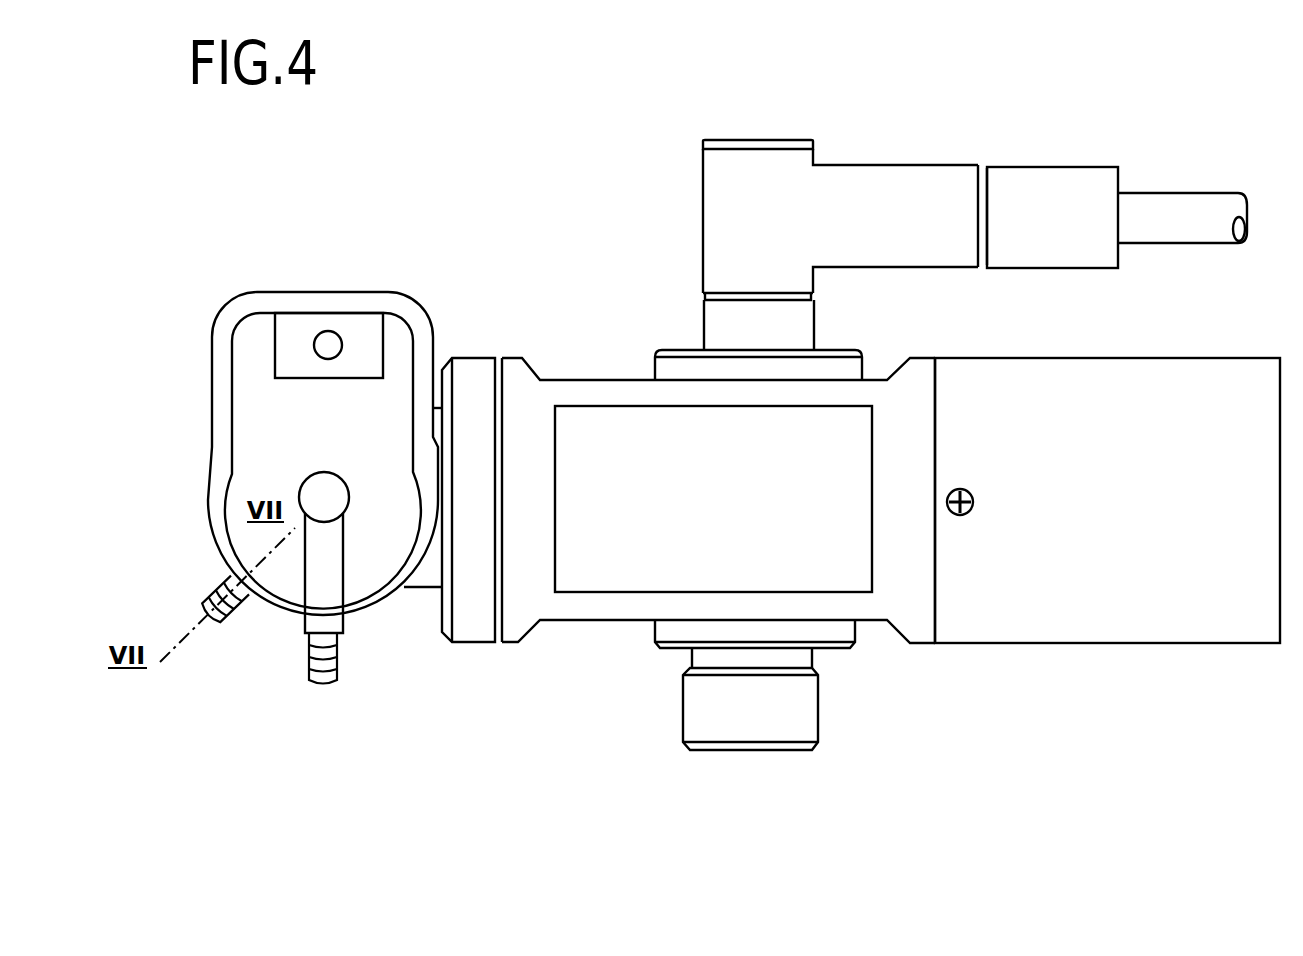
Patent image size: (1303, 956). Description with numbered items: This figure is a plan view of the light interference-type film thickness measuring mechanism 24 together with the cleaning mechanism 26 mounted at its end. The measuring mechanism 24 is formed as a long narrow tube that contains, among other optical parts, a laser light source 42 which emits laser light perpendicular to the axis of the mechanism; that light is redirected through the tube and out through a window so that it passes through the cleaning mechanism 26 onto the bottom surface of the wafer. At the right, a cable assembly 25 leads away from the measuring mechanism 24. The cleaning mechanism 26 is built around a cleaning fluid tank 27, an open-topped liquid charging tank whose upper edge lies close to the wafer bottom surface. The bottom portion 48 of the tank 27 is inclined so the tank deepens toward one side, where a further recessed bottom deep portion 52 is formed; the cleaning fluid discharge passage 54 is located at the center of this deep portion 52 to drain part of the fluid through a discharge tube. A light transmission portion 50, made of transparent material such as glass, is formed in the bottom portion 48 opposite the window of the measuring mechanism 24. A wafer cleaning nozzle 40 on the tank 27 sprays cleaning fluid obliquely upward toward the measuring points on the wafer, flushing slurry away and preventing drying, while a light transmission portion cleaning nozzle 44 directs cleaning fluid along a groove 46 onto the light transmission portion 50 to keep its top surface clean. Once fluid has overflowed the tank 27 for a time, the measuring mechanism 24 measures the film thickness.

The light interference-type film thickness measuring mechanism 24 is at (1180, 352).
The cable coupling assembly 25 is at (1043, 148).
The cleaning mechanism 26 is at (269, 417).
The cleaning fluid tank 27 is at (243, 300).
The wafer cleaning nozzle 40 is at (223, 593).
The laser light source 42 is at (762, 141).
The light transmission portion cleaning nozzle 44 is at (338, 672).
The groove 46 is at (312, 555).
The bottom portion 48 is at (243, 542).
The light transmission portion 50 is at (322, 483).
The bottom deep portion 52 is at (379, 325).
The cleaning fluid discharge passage 54 is at (328, 331).